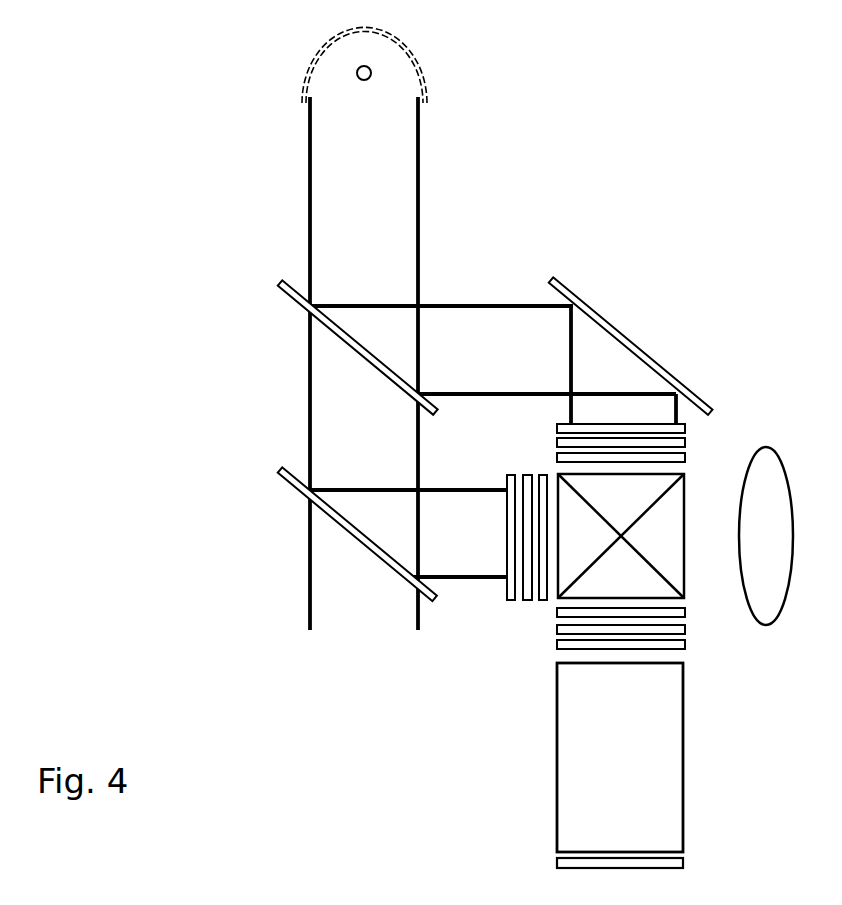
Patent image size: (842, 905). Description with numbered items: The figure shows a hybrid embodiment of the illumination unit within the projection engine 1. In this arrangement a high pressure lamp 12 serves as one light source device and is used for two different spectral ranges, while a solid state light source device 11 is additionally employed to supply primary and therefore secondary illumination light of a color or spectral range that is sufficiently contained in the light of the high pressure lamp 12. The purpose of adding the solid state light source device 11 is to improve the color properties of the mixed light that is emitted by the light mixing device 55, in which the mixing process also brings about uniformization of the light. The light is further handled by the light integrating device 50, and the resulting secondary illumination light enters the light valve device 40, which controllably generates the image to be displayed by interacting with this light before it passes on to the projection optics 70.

The projection engine 1 is at (190, 224).
The high pressure lamp 12 is at (423, 80).
The light valve device 40 is at (557, 444).
The light mixing device 55 is at (638, 588).
The light integrating device 50 is at (601, 775).
The solid state light source device 11 is at (685, 860).
The projection optics 70 is at (747, 544).